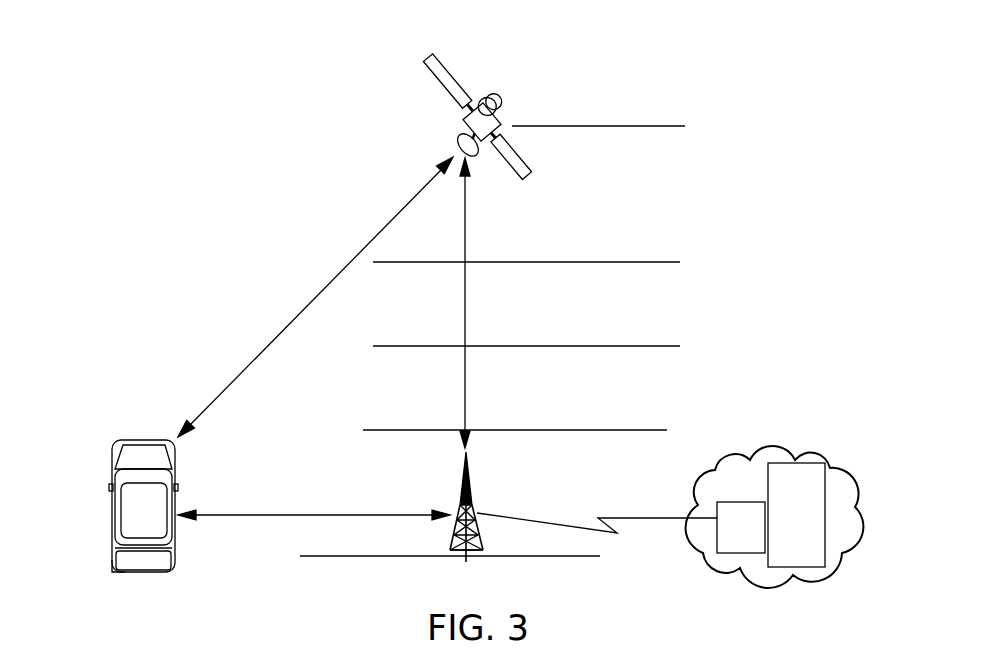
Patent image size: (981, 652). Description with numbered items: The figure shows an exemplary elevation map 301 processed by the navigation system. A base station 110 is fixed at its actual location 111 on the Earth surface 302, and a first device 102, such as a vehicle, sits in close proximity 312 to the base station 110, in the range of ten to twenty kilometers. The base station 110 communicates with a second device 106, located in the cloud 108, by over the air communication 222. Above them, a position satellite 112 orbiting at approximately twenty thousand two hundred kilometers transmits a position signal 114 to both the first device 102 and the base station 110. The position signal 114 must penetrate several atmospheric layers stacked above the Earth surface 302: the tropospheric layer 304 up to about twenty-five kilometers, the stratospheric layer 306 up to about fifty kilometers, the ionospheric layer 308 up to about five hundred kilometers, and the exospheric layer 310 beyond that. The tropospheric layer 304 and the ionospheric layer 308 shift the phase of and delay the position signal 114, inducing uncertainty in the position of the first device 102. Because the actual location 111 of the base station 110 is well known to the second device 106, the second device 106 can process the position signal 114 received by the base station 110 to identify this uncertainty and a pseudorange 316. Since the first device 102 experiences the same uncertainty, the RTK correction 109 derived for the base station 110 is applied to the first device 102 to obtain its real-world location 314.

The exemplary elevation map 301 is at (270, 33).
The position satellite 112 is at (467, 115).
The pseudorange 316 is at (657, 127).
The exospheric layer 310 is at (542, 225).
The ionospheric layer 308 is at (560, 312).
The stratospheric layer 306 is at (567, 398).
The tropospheric layer 304 is at (563, 487).
The position signal 114 is at (465, 280).
The first device 102 is at (118, 458).
The real-world location 314 is at (112, 570).
The close proximity 312 is at (337, 512).
The base station 110 is at (462, 490).
The actual location 111 is at (483, 551).
The Earth surface 302 is at (318, 557).
The over the air communication 222 is at (613, 533).
The cloud 108 is at (775, 440).
The RTK correction 109 is at (741, 527).
The second device 106 is at (796, 515).